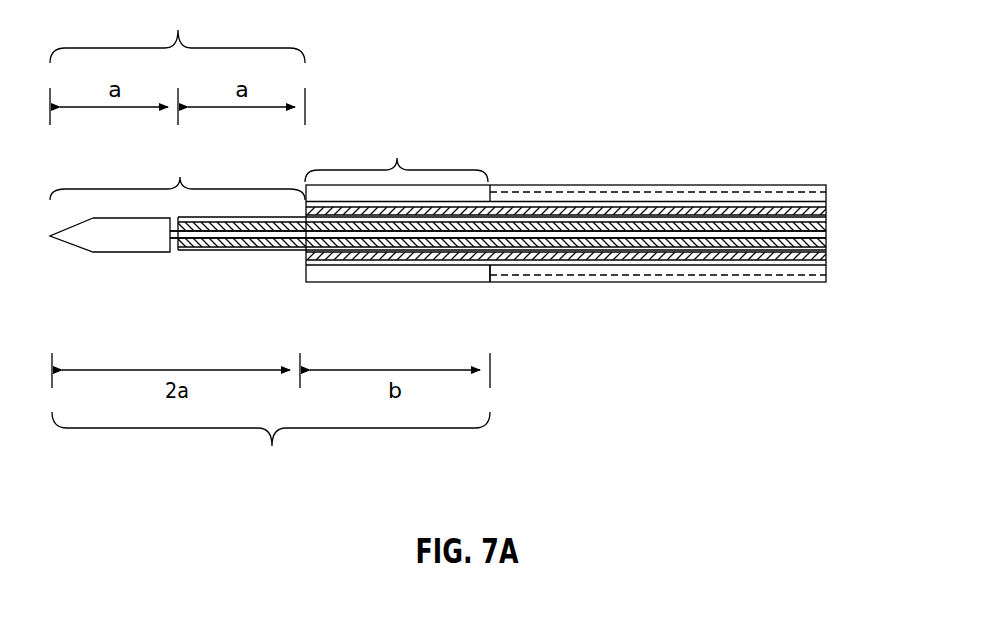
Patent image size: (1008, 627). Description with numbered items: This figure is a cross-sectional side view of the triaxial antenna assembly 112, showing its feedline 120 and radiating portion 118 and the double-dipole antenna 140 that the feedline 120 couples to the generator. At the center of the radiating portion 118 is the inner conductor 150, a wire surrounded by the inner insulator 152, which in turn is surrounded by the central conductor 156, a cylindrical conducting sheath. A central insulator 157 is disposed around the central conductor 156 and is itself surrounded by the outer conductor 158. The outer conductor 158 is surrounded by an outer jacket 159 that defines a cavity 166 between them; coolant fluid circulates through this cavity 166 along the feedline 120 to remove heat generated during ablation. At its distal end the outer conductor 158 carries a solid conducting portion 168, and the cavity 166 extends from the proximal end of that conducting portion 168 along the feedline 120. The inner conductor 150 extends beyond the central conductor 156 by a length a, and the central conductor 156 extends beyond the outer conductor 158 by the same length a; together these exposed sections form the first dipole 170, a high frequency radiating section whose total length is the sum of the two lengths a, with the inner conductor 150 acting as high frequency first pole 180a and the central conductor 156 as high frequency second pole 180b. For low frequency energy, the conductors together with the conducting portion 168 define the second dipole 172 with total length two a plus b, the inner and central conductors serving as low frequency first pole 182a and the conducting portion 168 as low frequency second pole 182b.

The triaxial antenna assembly 112 is at (659, 56).
The radiating portion 118 is at (449, 119).
The feedline 120 is at (689, 154).
The double-dipole antenna 140 is at (278, 280).
The inner conductor 150 is at (826, 232).
The inner insulator 152 is at (826, 240).
The central conductor 156 is at (792, 222).
The central insulator 157 is at (775, 207).
The outer conductor 158 is at (797, 262).
The outer jacket 159 is at (668, 275).
The cavity 166 is at (575, 267).
The solid conducting portion 168 is at (388, 283).
The first dipole 170 is at (177, 32).
The second dipole 172 is at (271, 448).
The high frequency first pole 180a is at (118, 253).
The high frequency second pole 180b is at (228, 252).
The low frequency first pole 182a is at (177, 175).
The low frequency second pole 182b is at (396, 155).